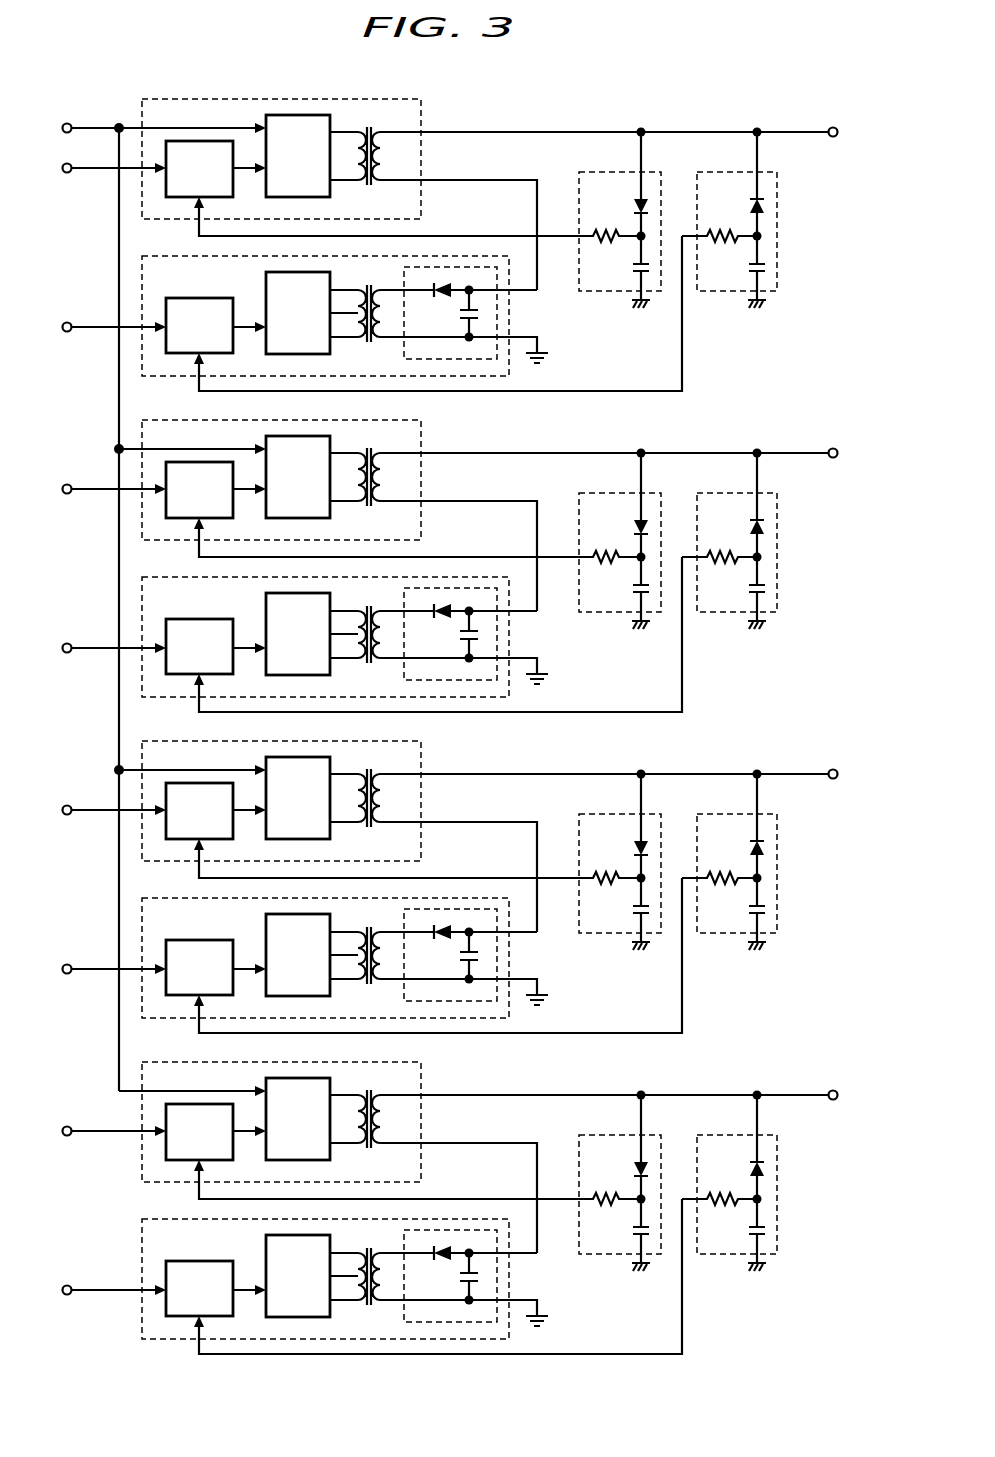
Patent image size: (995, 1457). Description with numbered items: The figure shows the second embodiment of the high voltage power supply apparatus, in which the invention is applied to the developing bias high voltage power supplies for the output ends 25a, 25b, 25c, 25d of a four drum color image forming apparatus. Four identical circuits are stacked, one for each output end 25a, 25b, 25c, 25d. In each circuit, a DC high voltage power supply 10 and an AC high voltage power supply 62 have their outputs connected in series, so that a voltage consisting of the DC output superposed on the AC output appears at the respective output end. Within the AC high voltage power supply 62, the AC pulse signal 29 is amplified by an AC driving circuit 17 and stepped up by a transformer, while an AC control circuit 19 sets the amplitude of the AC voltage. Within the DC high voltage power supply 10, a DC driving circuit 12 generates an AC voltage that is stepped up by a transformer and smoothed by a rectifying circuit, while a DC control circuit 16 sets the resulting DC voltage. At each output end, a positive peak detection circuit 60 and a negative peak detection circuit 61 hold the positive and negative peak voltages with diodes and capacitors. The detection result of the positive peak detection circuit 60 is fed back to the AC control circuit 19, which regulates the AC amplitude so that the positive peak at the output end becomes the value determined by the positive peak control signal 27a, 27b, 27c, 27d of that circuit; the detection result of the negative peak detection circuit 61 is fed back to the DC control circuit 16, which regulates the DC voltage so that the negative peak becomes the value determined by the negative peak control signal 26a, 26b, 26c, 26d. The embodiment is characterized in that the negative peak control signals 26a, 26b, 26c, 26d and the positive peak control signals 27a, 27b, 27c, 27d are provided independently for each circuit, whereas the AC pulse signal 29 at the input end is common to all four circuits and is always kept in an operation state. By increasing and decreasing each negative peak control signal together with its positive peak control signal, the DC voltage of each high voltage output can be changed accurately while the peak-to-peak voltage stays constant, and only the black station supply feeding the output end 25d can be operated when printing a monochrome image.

The AC pulse signal 29 is at (67, 123).
The positive peak control signal 27d is at (67, 173).
The positive peak control signal 27c is at (108, 518).
The positive peak control signal 27b is at (108, 839).
The positive peak control signal 27a is at (108, 1160).
The negative peak control signal 26d is at (67, 322).
The negative peak control signal 26c is at (108, 618).
The negative peak control signal 26b is at (108, 939).
The negative peak control signal 26a is at (108, 1260).
The output end 25d is at (833, 137).
The output end 25c is at (809, 482).
The output end 25b is at (811, 803).
The output end 25a is at (810, 1124).
The AC control circuit 19 is at (198, 141).
The AC driving circuit 17 is at (331, 191).
The DC control circuit 16 is at (208, 298).
The DC driving circuit 12 is at (331, 348).
The AC high voltage power supply 62 is at (423, 108).
The DC high voltage power supply 10 is at (512, 311).
The positive peak detection circuit 60 is at (604, 292).
The negative peak detection circuit 61 is at (722, 292).